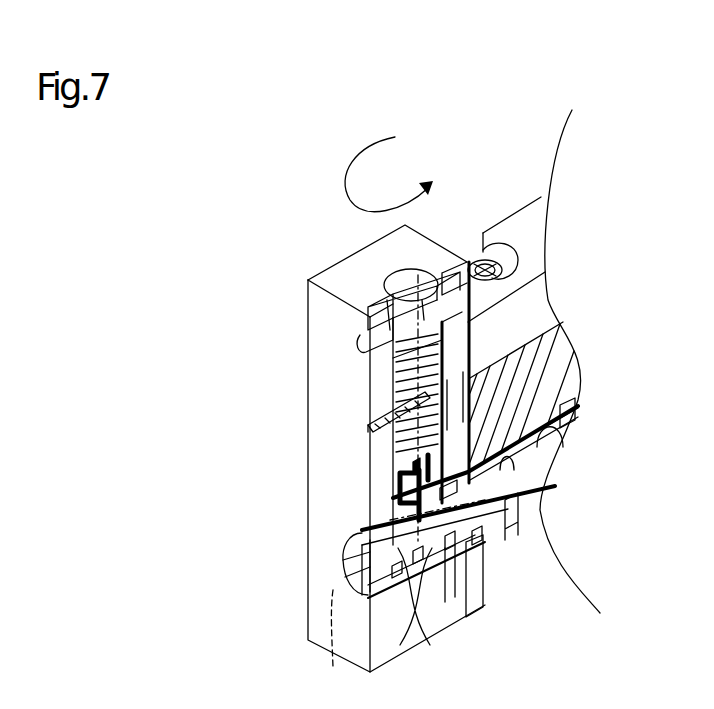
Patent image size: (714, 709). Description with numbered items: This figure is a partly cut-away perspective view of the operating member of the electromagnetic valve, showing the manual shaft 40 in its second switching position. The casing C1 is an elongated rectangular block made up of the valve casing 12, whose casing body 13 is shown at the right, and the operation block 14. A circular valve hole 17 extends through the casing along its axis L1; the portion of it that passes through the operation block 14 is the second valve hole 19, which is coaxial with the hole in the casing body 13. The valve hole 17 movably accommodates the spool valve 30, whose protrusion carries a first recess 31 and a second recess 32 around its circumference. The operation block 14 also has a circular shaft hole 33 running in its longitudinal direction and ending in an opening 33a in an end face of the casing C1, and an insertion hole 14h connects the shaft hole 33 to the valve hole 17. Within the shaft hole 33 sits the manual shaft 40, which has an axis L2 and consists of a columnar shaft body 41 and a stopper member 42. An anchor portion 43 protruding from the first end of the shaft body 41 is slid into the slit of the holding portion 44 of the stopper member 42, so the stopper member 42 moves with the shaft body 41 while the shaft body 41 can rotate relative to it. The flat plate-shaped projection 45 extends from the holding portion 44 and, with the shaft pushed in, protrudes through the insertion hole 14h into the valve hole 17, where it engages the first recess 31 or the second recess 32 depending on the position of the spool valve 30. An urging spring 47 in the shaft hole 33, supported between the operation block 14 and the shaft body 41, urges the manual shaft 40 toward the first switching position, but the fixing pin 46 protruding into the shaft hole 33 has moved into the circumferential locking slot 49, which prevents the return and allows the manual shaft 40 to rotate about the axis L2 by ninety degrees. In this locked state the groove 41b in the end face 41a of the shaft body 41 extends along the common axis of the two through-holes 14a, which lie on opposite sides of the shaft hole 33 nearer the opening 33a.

The valve casing 12 is at (516, 232).
The casing body 13 is at (576, 380).
The operation block 14 is at (381, 248).
The through-holes 14a is at (360, 340).
The insertion hole 14h is at (390, 520).
The valve hole 17 is at (432, 545).
The second valve hole 19 is at (395, 545).
The spool valve 30 is at (345, 572).
The first recess 31 is at (440, 560).
The second recess 32 is at (466, 606).
The shaft hole 33 is at (398, 288).
The opening 33a is at (438, 270).
The manual shaft 40 is at (415, 386).
The shaft body 41 is at (460, 345).
The end face 41a is at (390, 301).
The groove 41b is at (385, 324).
The stopper member 42 is at (448, 448).
The anchor portion 43 is at (395, 442).
The holding portion 44 is at (395, 498).
The projection 45 is at (510, 537).
The fixing pin 46 is at (370, 428).
The urging spring 47 is at (395, 480).
The locking slot 49 is at (450, 400).
The casing C1 is at (528, 215).
The axis of the valve hole L1 is at (336, 643).
The axis of the manual shaft L2 is at (380, 300).